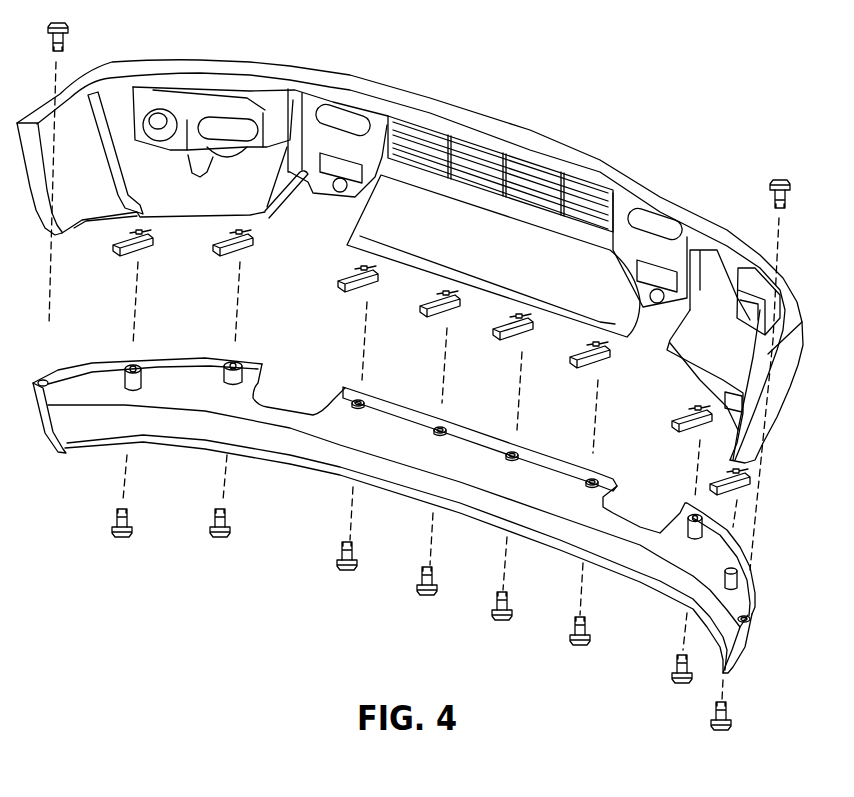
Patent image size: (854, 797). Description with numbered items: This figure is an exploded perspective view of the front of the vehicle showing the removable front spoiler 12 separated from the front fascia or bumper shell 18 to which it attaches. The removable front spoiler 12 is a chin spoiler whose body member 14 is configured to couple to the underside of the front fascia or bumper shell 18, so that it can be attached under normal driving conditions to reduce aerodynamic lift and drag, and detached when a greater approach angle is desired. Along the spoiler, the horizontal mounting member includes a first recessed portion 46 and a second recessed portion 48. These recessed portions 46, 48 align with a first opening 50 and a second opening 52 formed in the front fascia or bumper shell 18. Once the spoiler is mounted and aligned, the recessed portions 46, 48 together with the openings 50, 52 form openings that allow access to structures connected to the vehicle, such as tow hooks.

The removable front spoiler 12 is at (757, 663).
The body member 14 is at (755, 596).
The front fascia or bumper shell 18 is at (599, 159).
The first recessed portion 46 is at (288, 403).
The second recessed portion 48 is at (640, 522).
The first opening 50 is at (285, 201).
The second opening 52 is at (628, 315).